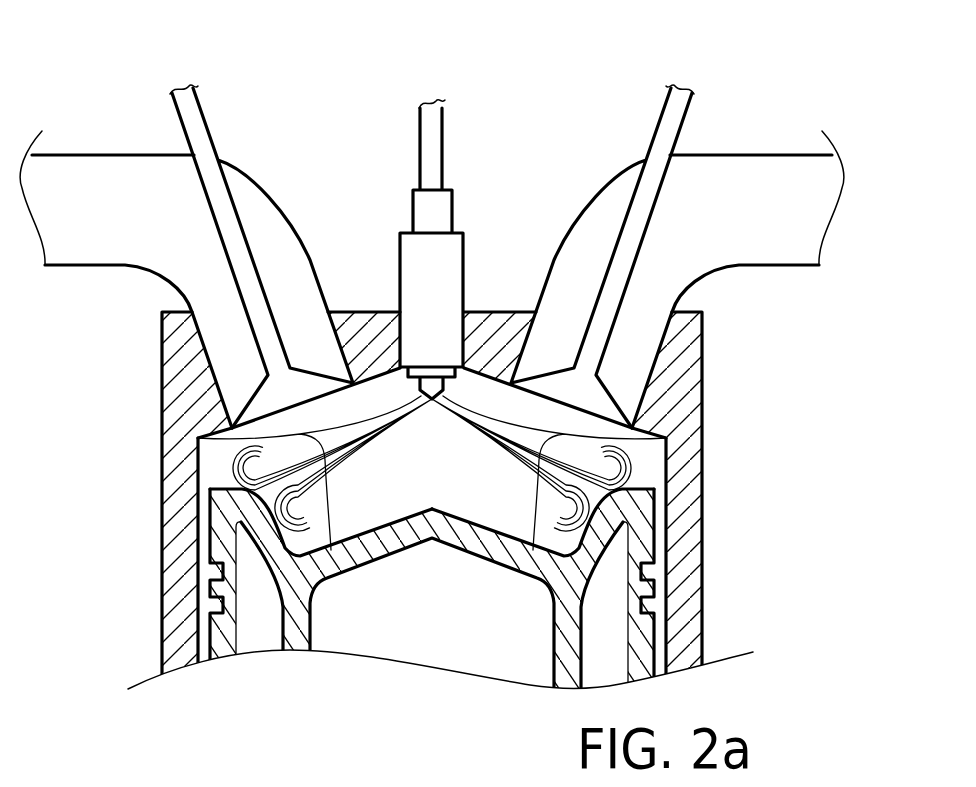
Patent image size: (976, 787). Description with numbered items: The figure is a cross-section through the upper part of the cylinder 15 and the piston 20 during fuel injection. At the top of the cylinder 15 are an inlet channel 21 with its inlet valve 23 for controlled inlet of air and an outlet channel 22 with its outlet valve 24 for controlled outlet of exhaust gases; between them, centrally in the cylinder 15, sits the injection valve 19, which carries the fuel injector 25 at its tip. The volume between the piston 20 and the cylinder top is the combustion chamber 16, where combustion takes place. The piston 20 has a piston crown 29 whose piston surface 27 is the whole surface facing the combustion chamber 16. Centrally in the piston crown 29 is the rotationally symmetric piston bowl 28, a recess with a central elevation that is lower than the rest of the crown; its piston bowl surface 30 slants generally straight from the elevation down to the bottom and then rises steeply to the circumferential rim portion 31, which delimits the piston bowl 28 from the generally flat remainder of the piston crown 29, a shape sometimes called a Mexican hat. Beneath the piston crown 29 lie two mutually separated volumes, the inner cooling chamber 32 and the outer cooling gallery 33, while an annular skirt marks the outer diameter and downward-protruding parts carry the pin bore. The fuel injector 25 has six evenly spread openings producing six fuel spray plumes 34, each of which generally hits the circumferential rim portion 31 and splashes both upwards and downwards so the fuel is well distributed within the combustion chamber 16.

The cylinder 15 is at (160, 586).
The combustion chamber 16 is at (217, 463).
The injection valve 19 is at (420, 127).
The piston 20 is at (655, 640).
The inlet channel 21 is at (776, 155).
The outlet channel 22 is at (88, 155).
The inlet valve 23 is at (679, 125).
The outlet valve 24 is at (185, 125).
The fuel injector 25 is at (668, 438).
The piston surface 27 is at (494, 514).
The piston bowl 28 is at (345, 503).
The piston crown 29 is at (636, 465).
The piston bowl surface 30 is at (368, 507).
The circumferential rim portion 31 is at (245, 512).
The cooling chamber 32 is at (478, 606).
The cooling gallery 33 is at (268, 617).
The fuel spray plume 34 is at (210, 433).